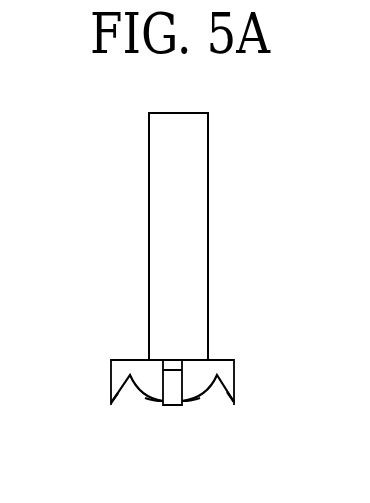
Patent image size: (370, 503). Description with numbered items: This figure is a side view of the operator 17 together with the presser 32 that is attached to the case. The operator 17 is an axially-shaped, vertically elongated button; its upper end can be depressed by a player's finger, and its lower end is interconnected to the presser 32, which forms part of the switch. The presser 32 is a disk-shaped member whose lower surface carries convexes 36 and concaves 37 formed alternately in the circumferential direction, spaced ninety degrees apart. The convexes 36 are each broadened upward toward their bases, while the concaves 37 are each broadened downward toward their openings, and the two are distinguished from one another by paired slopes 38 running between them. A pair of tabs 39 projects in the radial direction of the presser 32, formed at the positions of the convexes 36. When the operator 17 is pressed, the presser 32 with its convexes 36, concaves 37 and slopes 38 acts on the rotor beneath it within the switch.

The operator 17 is at (192, 196).
The presser 32 is at (112, 362).
The convexes 36 is at (158, 383).
The concaves 37 is at (143, 402).
The paired slopes 38 is at (122, 401).
The tabs 39 is at (188, 378).